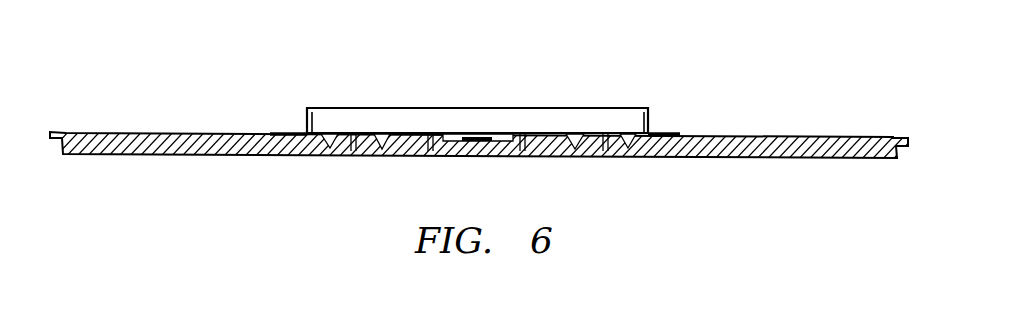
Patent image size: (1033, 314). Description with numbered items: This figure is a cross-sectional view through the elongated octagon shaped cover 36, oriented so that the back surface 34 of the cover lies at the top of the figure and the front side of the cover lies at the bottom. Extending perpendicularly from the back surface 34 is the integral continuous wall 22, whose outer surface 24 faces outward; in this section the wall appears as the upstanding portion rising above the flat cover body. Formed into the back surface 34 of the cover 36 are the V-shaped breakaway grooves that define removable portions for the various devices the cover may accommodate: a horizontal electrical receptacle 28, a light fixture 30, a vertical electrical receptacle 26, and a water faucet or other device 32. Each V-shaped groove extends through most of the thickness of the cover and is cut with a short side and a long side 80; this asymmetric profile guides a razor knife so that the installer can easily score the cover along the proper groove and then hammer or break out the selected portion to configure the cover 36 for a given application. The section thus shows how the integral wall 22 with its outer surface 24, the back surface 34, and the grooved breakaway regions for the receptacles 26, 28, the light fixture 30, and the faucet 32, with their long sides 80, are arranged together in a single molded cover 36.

The integral continuous wall 22 is at (618, 117).
The outer surface 24 is at (307, 115).
The vertical electrical receptacle 26 is at (574, 146).
The horizontal electrical receptacle 28 is at (327, 142).
The lighting fixture 30 is at (332, 155).
The water faucet 32 is at (435, 150).
The back surface 34 is at (122, 133).
The elongated octagon shaped cover 36 is at (762, 84).
The long side 80 is at (272, 134).